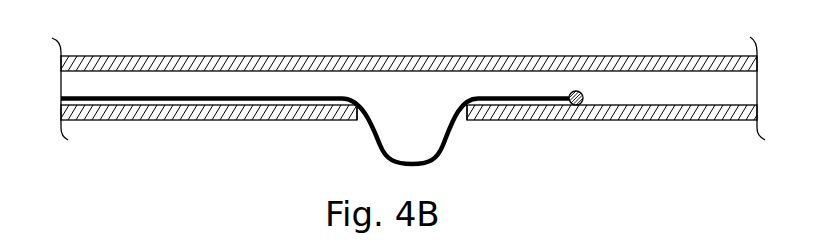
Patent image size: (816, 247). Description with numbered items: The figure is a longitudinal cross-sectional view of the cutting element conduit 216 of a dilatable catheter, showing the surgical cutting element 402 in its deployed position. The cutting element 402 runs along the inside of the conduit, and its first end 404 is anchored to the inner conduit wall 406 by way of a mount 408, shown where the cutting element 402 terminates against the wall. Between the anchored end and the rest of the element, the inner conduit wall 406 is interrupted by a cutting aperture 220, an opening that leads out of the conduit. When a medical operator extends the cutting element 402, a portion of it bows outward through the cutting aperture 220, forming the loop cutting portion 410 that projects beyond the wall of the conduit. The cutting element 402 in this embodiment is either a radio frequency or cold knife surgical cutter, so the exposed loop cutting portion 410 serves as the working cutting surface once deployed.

The cutting element conduit 216 is at (583, 80).
The cutting element 402 is at (188, 99).
The first end 404 is at (553, 95).
The inner conduit wall 406 is at (670, 100).
The mount 408 is at (583, 94).
The loop cutting portion 410 is at (447, 145).
The cutting aperture 220 is at (361, 123).